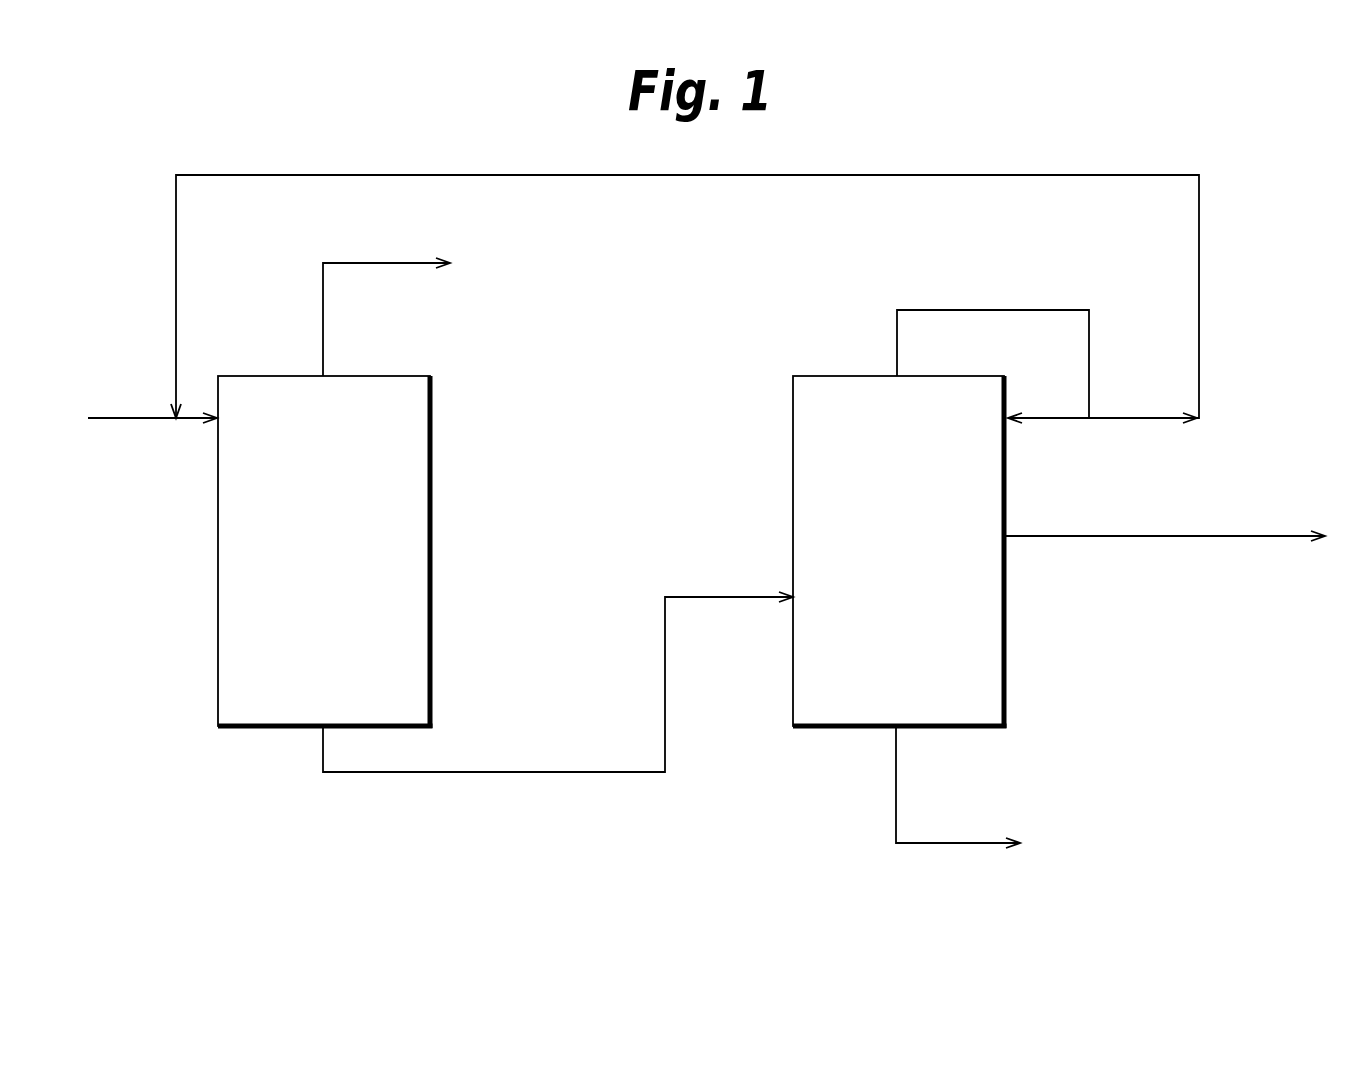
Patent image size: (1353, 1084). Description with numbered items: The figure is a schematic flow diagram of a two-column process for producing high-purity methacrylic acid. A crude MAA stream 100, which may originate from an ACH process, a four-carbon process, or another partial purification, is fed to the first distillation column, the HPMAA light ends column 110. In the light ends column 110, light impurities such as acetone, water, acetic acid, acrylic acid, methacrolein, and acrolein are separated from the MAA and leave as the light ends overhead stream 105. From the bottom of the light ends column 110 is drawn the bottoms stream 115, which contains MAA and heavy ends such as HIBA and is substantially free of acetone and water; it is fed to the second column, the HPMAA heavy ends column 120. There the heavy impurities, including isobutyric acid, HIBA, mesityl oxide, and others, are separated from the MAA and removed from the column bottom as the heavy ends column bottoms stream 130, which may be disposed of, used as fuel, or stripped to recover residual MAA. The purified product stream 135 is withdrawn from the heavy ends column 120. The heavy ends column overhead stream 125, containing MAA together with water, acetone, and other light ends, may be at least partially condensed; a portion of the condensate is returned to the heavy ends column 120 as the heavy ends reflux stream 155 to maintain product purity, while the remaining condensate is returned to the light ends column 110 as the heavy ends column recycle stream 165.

The crude MAA stream 100 is at (123, 418).
The light ends overhead stream 105 is at (382, 263).
The HPMAA light ends column 110 is at (432, 495).
The bottoms stream 115 is at (517, 772).
The HPMAA heavy ends column 120 is at (1005, 668).
The heavy ends column overhead stream 125 is at (993, 310).
The heavy ends column bottoms stream 130 is at (945, 843).
The product stream 135 is at (1252, 536).
The heavy ends reflux stream 155 is at (1055, 418).
The heavy ends column recycle stream 165 is at (1152, 418).